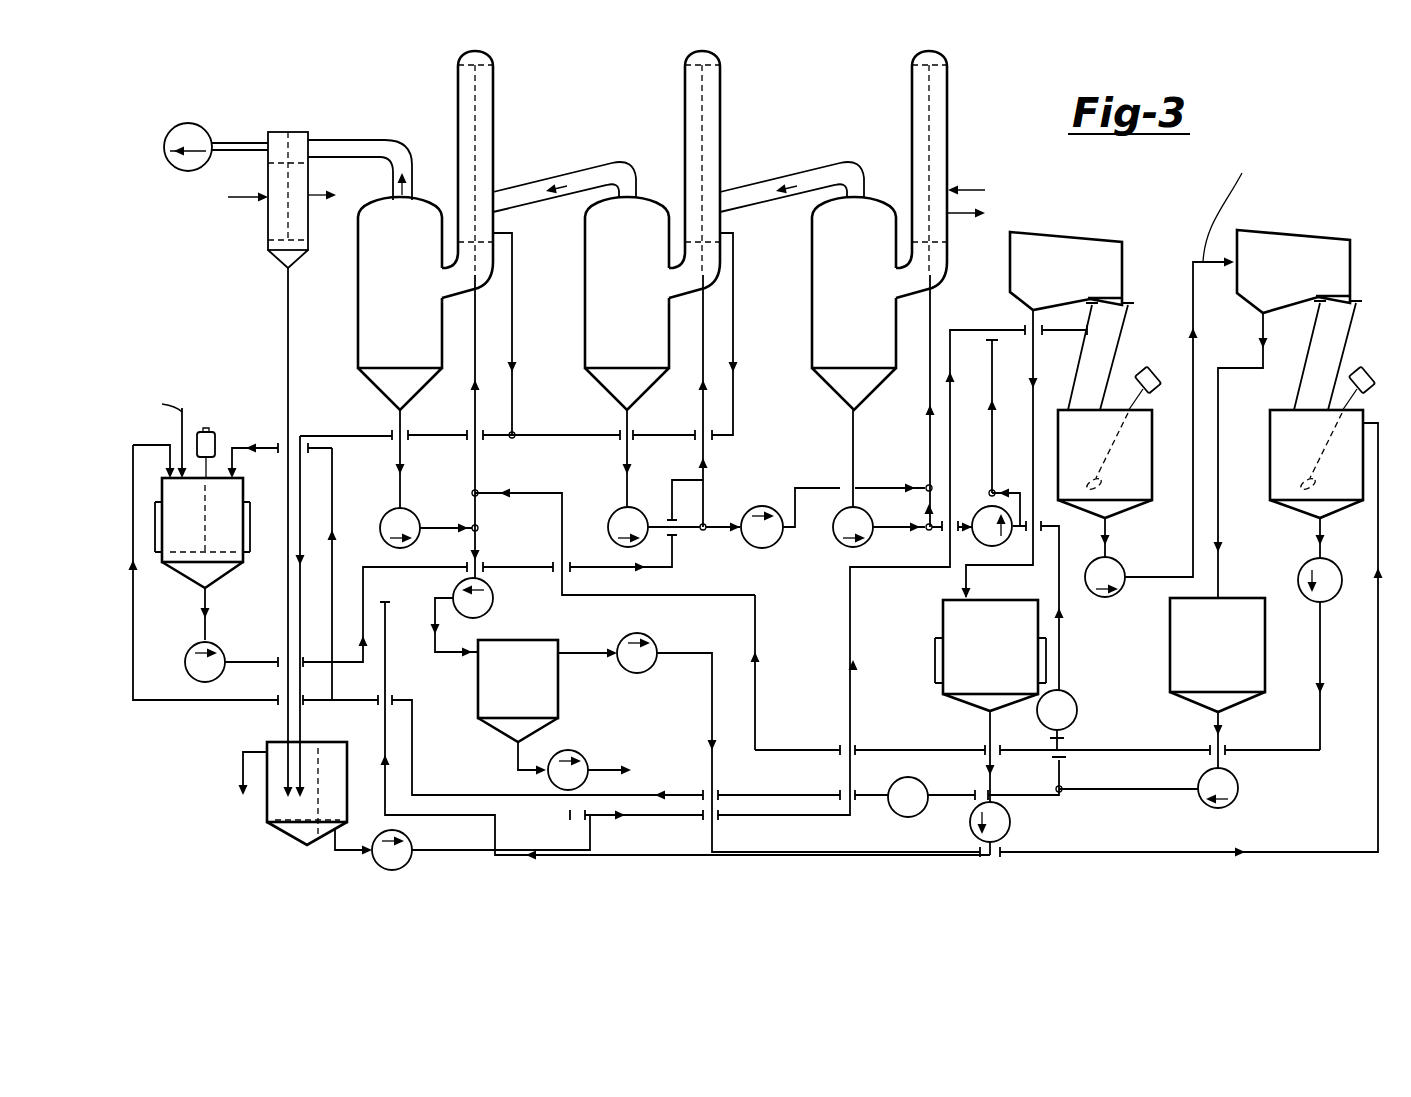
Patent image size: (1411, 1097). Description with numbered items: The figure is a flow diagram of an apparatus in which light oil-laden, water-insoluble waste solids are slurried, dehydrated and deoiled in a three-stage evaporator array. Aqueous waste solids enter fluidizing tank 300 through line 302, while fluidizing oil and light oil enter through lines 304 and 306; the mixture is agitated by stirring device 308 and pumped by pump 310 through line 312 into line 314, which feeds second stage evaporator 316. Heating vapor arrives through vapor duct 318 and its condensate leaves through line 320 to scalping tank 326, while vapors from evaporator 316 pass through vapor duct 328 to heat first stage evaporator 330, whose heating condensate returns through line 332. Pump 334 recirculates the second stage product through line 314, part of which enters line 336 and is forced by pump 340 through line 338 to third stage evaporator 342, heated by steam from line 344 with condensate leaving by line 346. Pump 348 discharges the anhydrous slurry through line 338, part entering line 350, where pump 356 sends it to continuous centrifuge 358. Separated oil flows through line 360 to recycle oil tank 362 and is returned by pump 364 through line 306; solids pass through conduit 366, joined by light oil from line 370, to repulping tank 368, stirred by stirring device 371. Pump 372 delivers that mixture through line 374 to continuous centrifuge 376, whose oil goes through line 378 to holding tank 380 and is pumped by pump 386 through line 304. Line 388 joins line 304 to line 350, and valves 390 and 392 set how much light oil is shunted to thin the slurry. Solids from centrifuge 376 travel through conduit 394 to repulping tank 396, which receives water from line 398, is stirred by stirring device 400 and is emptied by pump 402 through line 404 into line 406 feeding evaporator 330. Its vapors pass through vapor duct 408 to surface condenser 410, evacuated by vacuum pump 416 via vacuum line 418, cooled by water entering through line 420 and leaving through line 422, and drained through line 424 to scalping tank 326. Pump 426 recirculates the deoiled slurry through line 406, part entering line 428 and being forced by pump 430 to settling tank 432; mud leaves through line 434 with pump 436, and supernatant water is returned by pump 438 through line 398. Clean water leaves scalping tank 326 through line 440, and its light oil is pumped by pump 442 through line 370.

The fluidizing tank 300 is at (195, 580).
The line 302 is at (182, 422).
The line 304 is at (133, 488).
The line 306 is at (280, 450).
The stirring device 308 is at (214, 440).
The pump 310 is at (212, 655).
The line 312 is at (236, 663).
The line 314 is at (627, 458).
The second stage evaporator 316 is at (585, 262).
The vapor duct 318 is at (796, 175).
The line 320 is at (735, 316).
The scalping tank 326 is at (327, 742).
The vapor duct 328 is at (542, 177).
The first stage evaporator 330 is at (358, 310).
The line 332 is at (512, 345).
The pump 334 is at (616, 512).
The line 336 is at (702, 531).
The line 338 is at (928, 405).
The pump 340 is at (779, 506).
The third stage evaporator 342 is at (812, 265).
The line 344 is at (962, 189).
The line 346 is at (960, 219).
The pump 348 is at (835, 536).
The line 350 is at (990, 493).
The pump 356 is at (975, 538).
The continuous centrifuge 358 is at (1093, 232).
The line 360 is at (1032, 392).
The recycle oil tank 362 is at (998, 600).
The pump 364 is at (1011, 822).
The conduit 366 is at (1118, 343).
The repulping tank 368 is at (1123, 514).
The line 370 is at (335, 850).
The stirring device 371 is at (1150, 371).
The pump 372 is at (1096, 598).
The line 374 is at (1110, 550).
The continuous centrifuge 376 is at (1277, 232).
The line 378 is at (1262, 331).
The holding tank 380 is at (1230, 597).
The pump 386 is at (1240, 796).
The line 388 is at (1062, 655).
The valve 390 is at (900, 779).
The valve 392 is at (1076, 706).
The conduit 394 is at (1318, 327).
The repulping tank 396 is at (1300, 513).
The line 398 is at (675, 650).
The stirring device 400 is at (1376, 357).
The pump 402 is at (1311, 603).
The line 404 is at (758, 616).
The line 406 is at (474, 404).
The vapor duct 408 is at (350, 140).
The surface condenser 410 is at (265, 232).
The vacuum pump 416 is at (167, 166).
The vacuum line 418 is at (247, 142).
The line 420 is at (233, 200).
The line 422 is at (316, 194).
The line 424 is at (287, 312).
The pump 426 is at (405, 512).
The line 428 is at (478, 543).
The pump 430 is at (494, 602).
The settling tank 432 is at (538, 640).
The line 434 is at (516, 752).
The pump 436 is at (576, 750).
The pump 438 is at (648, 668).
The line 440 is at (243, 768).
The pump 442 is at (406, 862).